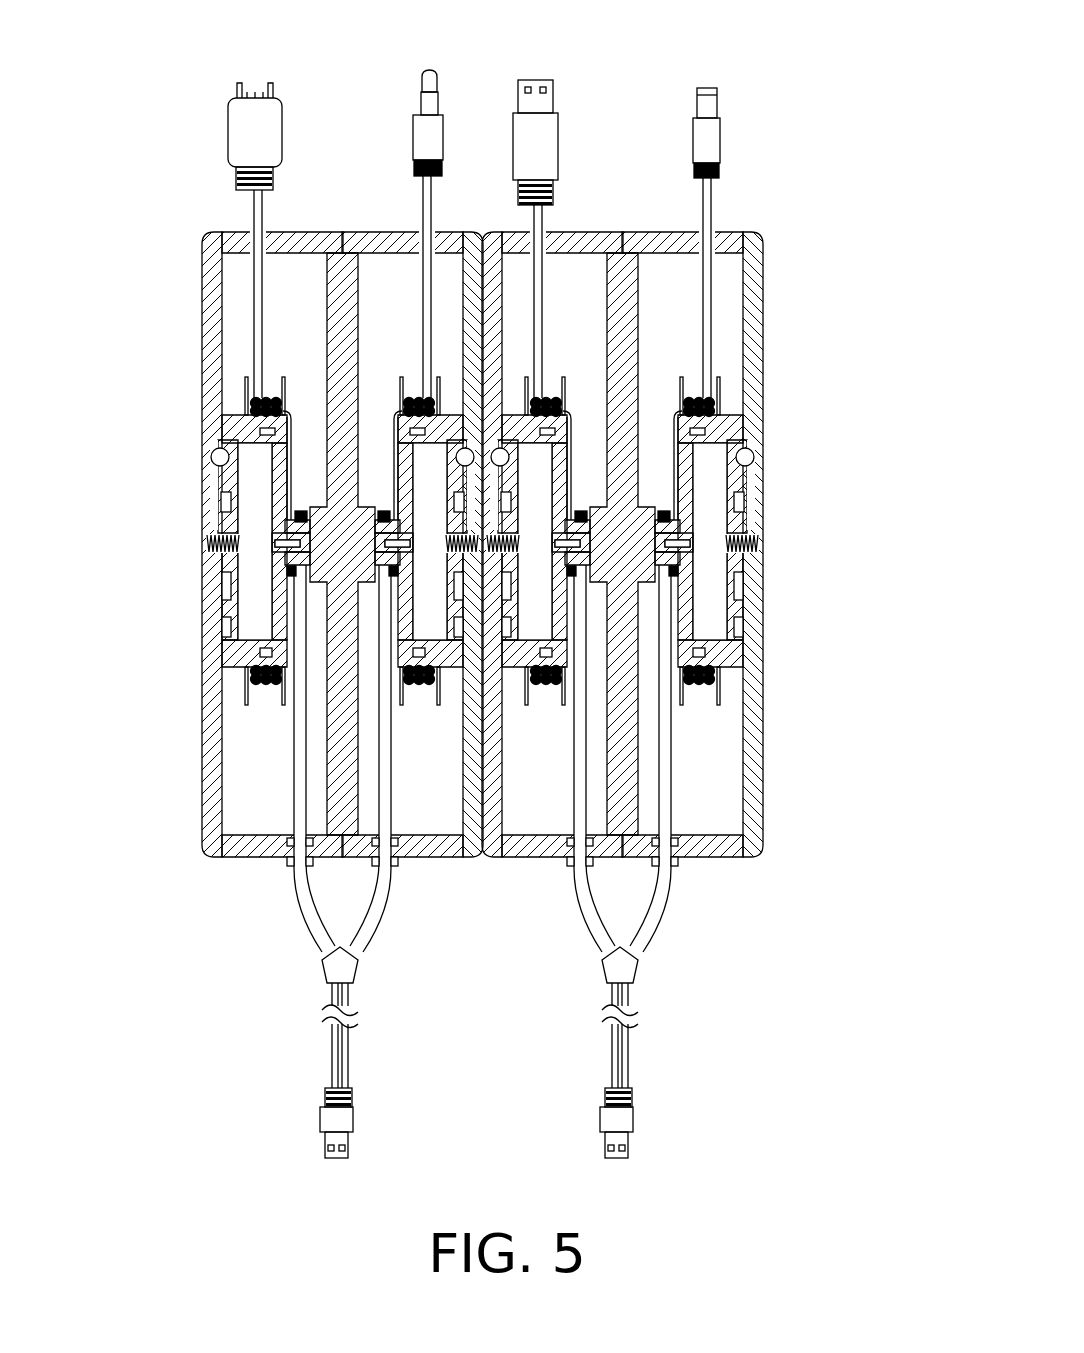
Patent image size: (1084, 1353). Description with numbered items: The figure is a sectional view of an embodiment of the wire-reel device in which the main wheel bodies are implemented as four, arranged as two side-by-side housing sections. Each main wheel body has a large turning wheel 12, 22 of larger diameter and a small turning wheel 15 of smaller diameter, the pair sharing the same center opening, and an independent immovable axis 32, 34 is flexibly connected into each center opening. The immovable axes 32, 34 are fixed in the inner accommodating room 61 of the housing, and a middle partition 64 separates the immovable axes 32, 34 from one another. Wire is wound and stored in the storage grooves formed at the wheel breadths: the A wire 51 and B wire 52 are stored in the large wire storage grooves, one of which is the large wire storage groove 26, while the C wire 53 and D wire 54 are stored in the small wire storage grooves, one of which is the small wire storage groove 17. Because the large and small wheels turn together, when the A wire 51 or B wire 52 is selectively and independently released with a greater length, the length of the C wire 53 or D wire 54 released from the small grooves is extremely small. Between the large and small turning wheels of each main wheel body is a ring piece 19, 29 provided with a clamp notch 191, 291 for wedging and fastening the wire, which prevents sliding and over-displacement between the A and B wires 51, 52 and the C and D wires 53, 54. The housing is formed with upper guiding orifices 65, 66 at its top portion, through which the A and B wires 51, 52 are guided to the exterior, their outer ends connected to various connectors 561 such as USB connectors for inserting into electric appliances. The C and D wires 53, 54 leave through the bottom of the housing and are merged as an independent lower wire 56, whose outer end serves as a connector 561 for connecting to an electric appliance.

The large turning wheel 12 is at (277, 533).
The small turning wheel 15 is at (293, 559).
The small wire storage groove 17 is at (317, 483).
The ring piece 19 is at (282, 708).
The clamp notch 191 is at (283, 387).
The large turning wheel 22 is at (723, 423).
The large wire storage groove 26 is at (684, 383).
The ring piece 29 is at (693, 700).
The clamp notch 291 is at (686, 398).
The immovable axis 32 is at (297, 542).
The immovable axis 34 is at (695, 528).
The A wire 51 is at (255, 273).
The B wire 52 is at (420, 345).
The C wire 53 is at (300, 775).
The D wire 54 is at (373, 928).
The lower wire 56 is at (333, 1045).
The connector 561 is at (245, 150).
The inner accommodating room 61 is at (230, 291).
The middle partition 64 is at (343, 297).
The upper guiding orifice 65 is at (275, 243).
The upper guiding orifice 66 is at (415, 245).